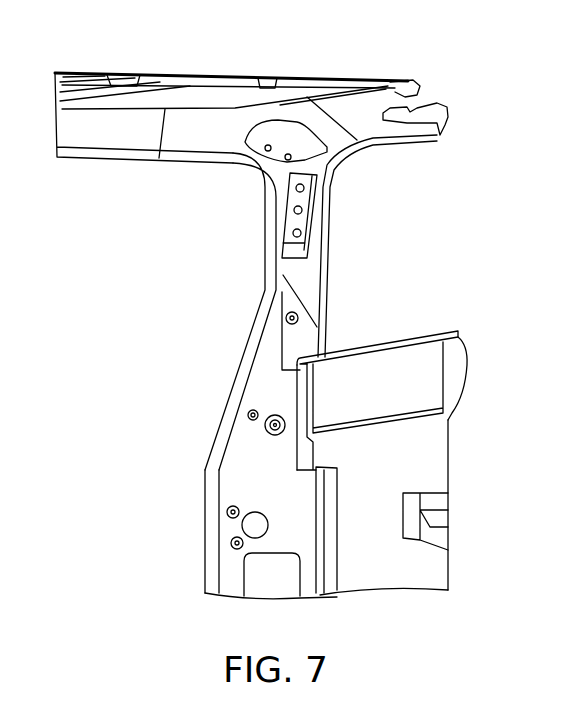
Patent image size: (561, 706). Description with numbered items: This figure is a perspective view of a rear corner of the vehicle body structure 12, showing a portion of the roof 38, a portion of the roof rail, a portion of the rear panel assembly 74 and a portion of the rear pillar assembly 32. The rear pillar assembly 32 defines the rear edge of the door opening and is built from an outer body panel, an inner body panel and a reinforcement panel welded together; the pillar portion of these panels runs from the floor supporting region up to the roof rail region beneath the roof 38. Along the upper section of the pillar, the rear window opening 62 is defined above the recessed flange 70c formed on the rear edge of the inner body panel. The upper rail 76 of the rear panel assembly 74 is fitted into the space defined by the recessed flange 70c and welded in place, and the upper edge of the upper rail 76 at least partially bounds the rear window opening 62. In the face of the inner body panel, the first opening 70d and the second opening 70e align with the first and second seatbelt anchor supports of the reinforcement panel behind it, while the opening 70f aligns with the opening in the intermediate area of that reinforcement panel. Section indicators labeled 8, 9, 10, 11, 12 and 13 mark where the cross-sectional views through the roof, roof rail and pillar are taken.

The roof 38 is at (190, 73).
The rear pillar assembly 32 is at (255, 212).
The first opening 70d is at (300, 188).
The opening 70f is at (298, 210).
The second opening 70e is at (297, 233).
The recessed flange 70c is at (297, 443).
The rear window opening 62 is at (423, 327).
The upper rail 76 is at (408, 375).
The rear panel assembly 74 is at (408, 450).
The section line for FIG. 8 is at (47, 127).
The section line for FIG. 9 is at (258, 195).
The section line for FIG. 10 is at (253, 233).
The section line for FIG. 11 is at (248, 275).
The vehicle body structure 12 is at (247, 333).
The section line for FIG. 13 is at (300, 68).